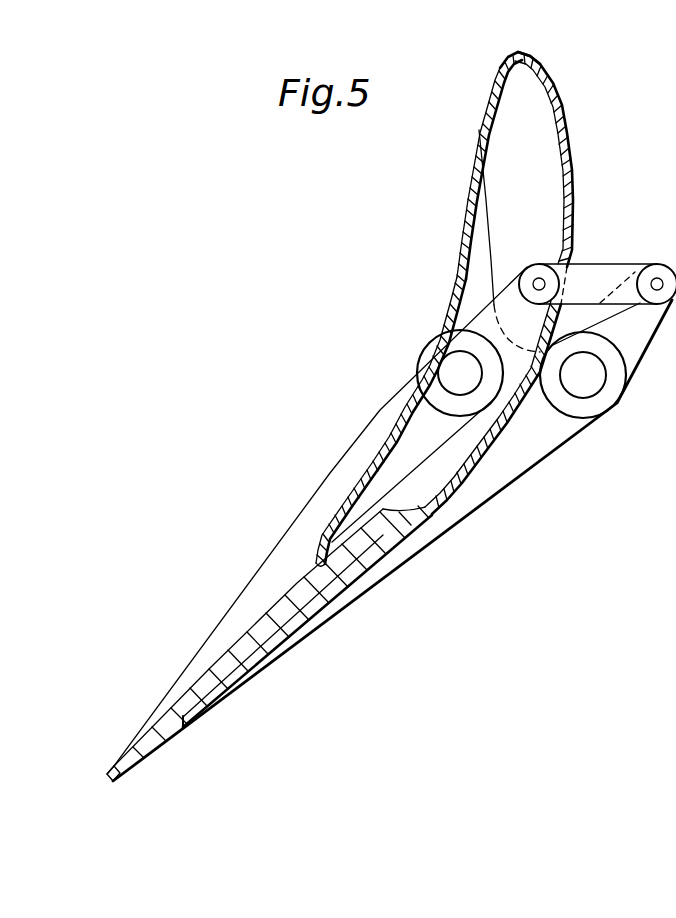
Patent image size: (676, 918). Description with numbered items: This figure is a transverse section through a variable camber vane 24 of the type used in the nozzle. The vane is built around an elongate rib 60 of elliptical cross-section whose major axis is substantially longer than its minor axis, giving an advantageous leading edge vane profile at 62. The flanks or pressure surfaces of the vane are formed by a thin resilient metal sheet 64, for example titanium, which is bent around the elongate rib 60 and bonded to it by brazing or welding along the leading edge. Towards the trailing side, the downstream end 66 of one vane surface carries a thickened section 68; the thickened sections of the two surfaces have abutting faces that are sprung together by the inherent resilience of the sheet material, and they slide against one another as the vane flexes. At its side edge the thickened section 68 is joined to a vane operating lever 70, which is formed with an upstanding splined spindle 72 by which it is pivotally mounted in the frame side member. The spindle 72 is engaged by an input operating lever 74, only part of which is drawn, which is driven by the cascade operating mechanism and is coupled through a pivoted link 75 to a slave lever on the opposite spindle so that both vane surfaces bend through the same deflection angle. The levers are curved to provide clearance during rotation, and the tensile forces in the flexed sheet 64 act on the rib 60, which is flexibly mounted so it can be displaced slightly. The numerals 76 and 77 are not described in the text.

The variable camber vane 24 is at (435, 215).
The elongate rib 60 is at (535, 185).
The leading edge vane profile 62 is at (527, 54).
The thin metal sheet 64 is at (450, 292).
The downstream end of vane surface 66 is at (245, 694).
The thickened section 68 is at (143, 768).
The vane operating lever 70 is at (207, 703).
The upstanding spindle 72 is at (165, 731).
The input operating lever 74 is at (335, 481).
The pivoted link 75 is at (458, 370).
The right wall of woven band 76 is at (480, 483).
The right roller 77 is at (583, 375).